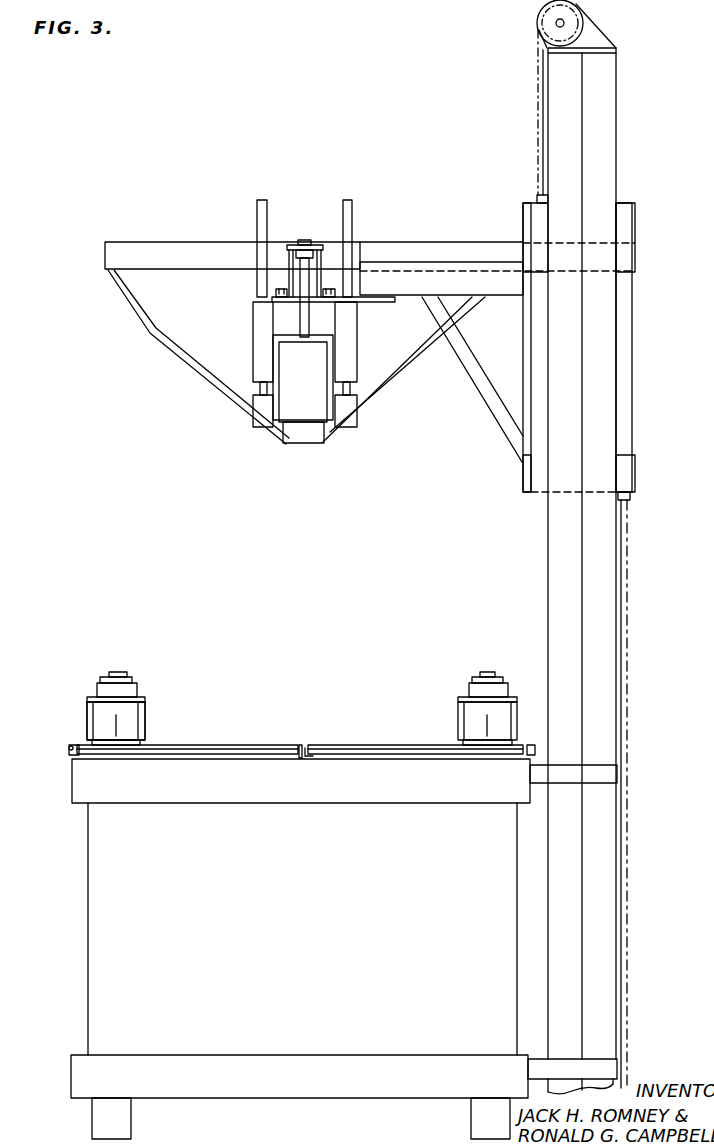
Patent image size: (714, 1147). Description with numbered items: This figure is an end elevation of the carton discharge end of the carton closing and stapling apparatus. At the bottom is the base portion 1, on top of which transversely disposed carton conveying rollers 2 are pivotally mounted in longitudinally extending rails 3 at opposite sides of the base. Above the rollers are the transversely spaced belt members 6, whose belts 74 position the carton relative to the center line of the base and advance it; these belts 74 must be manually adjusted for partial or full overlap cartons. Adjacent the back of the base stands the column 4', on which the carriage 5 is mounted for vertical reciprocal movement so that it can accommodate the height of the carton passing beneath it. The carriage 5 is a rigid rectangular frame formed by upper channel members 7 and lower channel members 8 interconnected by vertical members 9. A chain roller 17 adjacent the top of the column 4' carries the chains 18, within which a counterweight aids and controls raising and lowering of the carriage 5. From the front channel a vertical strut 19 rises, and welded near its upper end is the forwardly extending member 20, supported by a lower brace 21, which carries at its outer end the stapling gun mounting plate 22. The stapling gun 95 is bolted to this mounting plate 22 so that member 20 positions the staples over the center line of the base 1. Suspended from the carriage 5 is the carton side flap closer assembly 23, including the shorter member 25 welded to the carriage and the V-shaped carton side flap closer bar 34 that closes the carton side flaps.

The base portion 1 is at (318, 874).
The carton conveying rollers 2 is at (241, 747).
The rails 3 is at (69, 752).
The column 4' is at (616, 571).
The carriage 5 is at (650, 334).
The belt members 6 is at (146, 682).
The upper channel members 7 is at (523, 218).
The lower channel members 8 is at (524, 478).
The vertical members 9 is at (634, 390).
The chain roller 17 is at (544, 14).
The chains 18 is at (537, 118).
The vertical strut 19 is at (523, 328).
The forwardly extending member 20 is at (418, 262).
The lower brace 21 is at (486, 392).
The stapling gun mounting plate 22 is at (375, 302).
The carton side flap closer assembly 23 is at (192, 390).
The shorter member 25 is at (180, 244).
The carton side flap closer bar 34 is at (408, 384).
The belts 74 is at (148, 716).
The stapling gun 95 is at (316, 382).